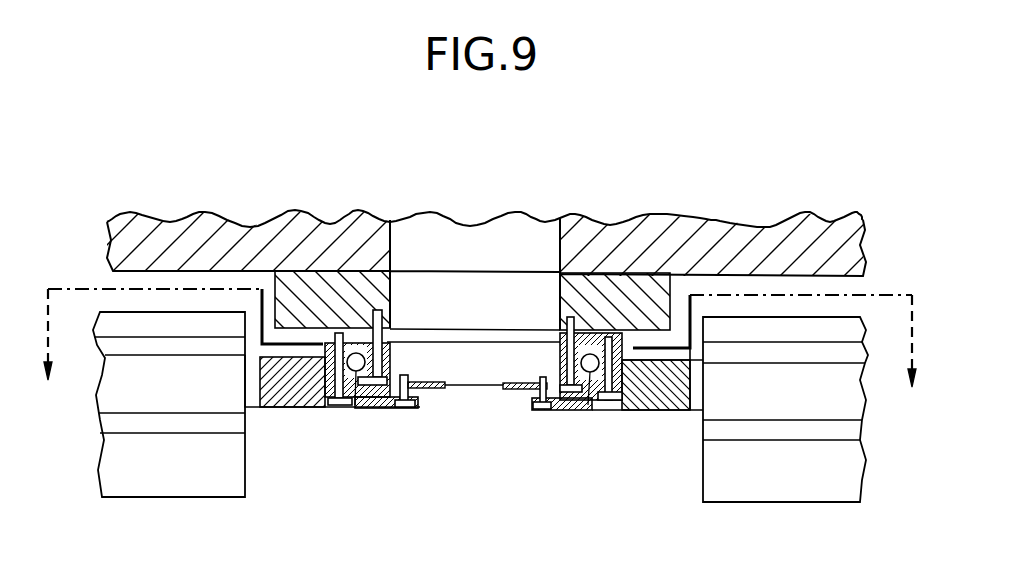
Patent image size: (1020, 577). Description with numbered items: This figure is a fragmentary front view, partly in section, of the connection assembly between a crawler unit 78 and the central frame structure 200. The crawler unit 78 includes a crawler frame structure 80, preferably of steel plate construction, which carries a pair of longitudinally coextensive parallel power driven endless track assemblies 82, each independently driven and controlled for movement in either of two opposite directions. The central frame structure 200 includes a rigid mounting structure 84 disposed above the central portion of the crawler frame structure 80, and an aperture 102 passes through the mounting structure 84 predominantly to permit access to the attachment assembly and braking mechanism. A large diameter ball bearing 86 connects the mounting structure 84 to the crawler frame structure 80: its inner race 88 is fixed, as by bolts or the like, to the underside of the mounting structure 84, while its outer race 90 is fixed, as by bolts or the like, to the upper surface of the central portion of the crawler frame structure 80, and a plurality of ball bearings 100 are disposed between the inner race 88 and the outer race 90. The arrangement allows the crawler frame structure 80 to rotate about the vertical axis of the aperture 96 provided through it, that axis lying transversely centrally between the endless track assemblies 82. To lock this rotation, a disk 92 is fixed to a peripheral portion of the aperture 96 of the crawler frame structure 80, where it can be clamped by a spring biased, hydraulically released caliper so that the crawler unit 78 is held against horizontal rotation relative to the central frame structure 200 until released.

The crawler unit 78 is at (154, 188).
The crawler frame structure 80 is at (273, 407).
The endless track assemblies 82 is at (223, 497).
The rigid mounting structure 84 is at (683, 277).
The ball bearing 86 is at (564, 411).
The inner race 88 is at (522, 384).
The outer race 90 is at (645, 393).
The disk 92 is at (445, 388).
The aperture 96 is at (417, 404).
The ball bearings 100 is at (357, 406).
The aperture 102 is at (558, 226).
The central frame structure 200 is at (372, 202).